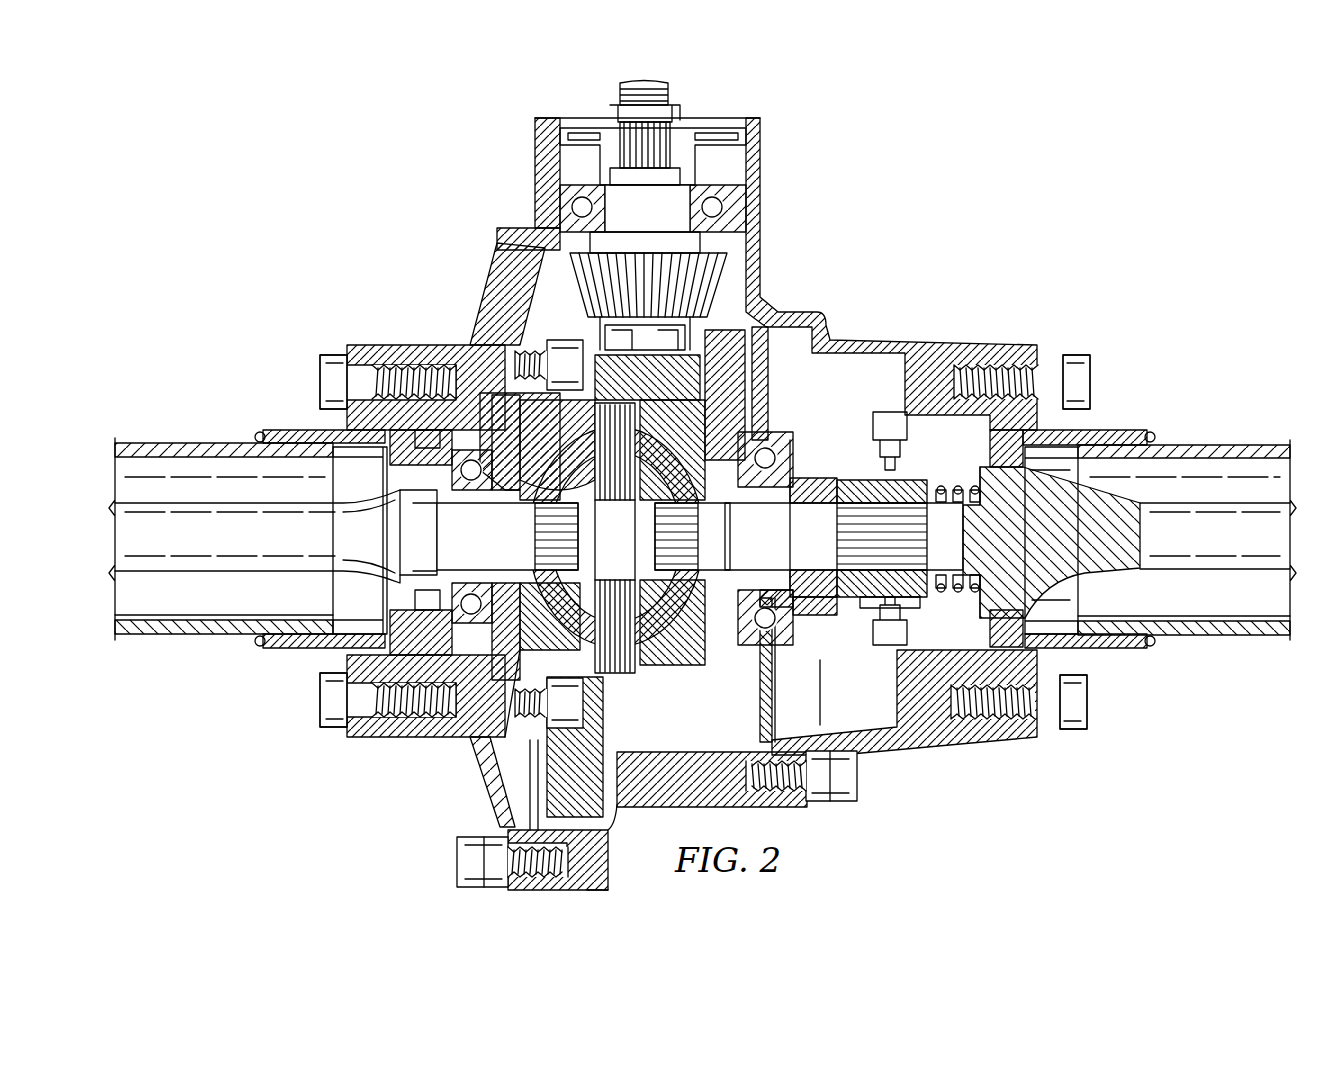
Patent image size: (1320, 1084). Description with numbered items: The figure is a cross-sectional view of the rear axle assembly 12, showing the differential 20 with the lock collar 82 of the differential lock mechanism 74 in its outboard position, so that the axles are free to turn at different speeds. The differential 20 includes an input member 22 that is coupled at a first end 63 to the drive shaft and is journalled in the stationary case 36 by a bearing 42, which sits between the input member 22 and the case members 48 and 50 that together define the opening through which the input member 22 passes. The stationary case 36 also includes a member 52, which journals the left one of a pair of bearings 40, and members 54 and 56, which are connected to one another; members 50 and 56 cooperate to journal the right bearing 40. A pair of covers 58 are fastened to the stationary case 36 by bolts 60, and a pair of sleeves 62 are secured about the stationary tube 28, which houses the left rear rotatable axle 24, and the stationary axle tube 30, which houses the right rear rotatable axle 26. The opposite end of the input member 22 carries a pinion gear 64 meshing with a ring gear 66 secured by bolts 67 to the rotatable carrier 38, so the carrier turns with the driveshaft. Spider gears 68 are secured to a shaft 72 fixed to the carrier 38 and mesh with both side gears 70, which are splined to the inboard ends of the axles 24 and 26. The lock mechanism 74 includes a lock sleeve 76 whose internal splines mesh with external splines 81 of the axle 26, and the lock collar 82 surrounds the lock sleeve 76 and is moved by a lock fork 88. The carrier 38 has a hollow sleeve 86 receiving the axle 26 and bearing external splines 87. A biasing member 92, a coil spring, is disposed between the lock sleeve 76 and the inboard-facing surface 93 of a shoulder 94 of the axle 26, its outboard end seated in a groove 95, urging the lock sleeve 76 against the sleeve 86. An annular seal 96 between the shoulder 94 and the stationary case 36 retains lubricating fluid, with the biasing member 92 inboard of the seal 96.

The rear axle assembly 12 is at (1005, 172).
The differential 20 is at (833, 300).
The input member 22 is at (614, 110).
The left rear rotatable axle 24 is at (250, 576).
The right rear rotatable axle 26 is at (1210, 580).
The stationary tube 28 is at (180, 443).
The stationary axle tube 30 is at (1213, 445).
The stationary case 36 is at (762, 130).
The rotatable carrier 38 is at (708, 648).
The bearings 40 is at (420, 620).
The bearing 42 is at (762, 205).
The member 48 is at (530, 192).
The member 50 is at (762, 168).
The member 52 is at (470, 312).
The member 54 is at (930, 345).
The member 56 is at (535, 895).
The covers 58 is at (358, 350).
The bolts 60 is at (328, 356).
The sleeves 62 is at (282, 430).
The first end 63 is at (662, 92).
The pinion gear 64 is at (748, 278).
The ring gear 66 is at (505, 290).
The bolts 67 is at (540, 325).
The spider gears 68 is at (683, 440).
The side gears 70 is at (540, 520).
The shaft 72 is at (615, 538).
The differential lock mechanism 74 is at (890, 655).
The lock sleeve 76 is at (848, 625).
The external splines 81 is at (845, 522).
The lock collar 82 is at (850, 465).
The hollow sleeve 86 is at (818, 600).
The external splines 87 is at (815, 475).
The lock fork 88 is at (880, 410).
The biasing member 92 is at (942, 485).
The inboard-facing surface 93 is at (968, 485).
The shoulder 94 is at (968, 612).
The groove 95 is at (965, 515).
The annular seal 96 is at (1080, 595).